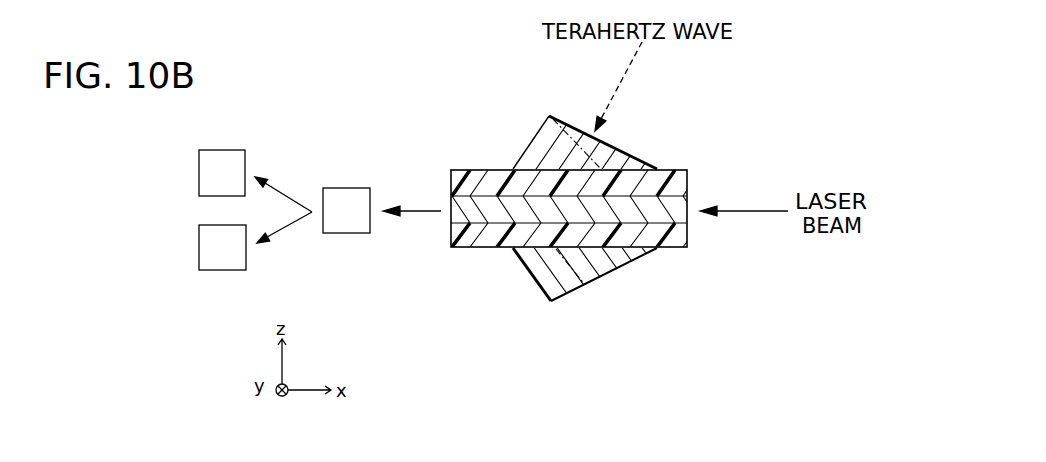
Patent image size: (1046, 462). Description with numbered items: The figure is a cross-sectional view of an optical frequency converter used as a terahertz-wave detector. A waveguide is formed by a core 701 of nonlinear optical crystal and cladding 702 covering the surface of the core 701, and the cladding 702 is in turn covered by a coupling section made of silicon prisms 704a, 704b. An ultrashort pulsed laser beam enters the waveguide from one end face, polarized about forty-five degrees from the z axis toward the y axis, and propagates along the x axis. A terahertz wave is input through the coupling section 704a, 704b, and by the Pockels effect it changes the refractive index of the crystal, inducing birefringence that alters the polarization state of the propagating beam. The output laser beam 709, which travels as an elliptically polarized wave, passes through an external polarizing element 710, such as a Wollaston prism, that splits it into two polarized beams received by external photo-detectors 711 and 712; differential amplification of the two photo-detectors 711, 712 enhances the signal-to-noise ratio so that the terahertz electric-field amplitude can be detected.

The core 701 is at (477, 218).
The cladding 702 is at (670, 245).
The coupling section 704a is at (568, 116).
The coupling section 704b is at (565, 295).
The output laser beam 709 is at (420, 210).
The polarizing element 710 is at (342, 225).
The photo-detector 711 is at (230, 155).
The photo-detector 712 is at (223, 262).